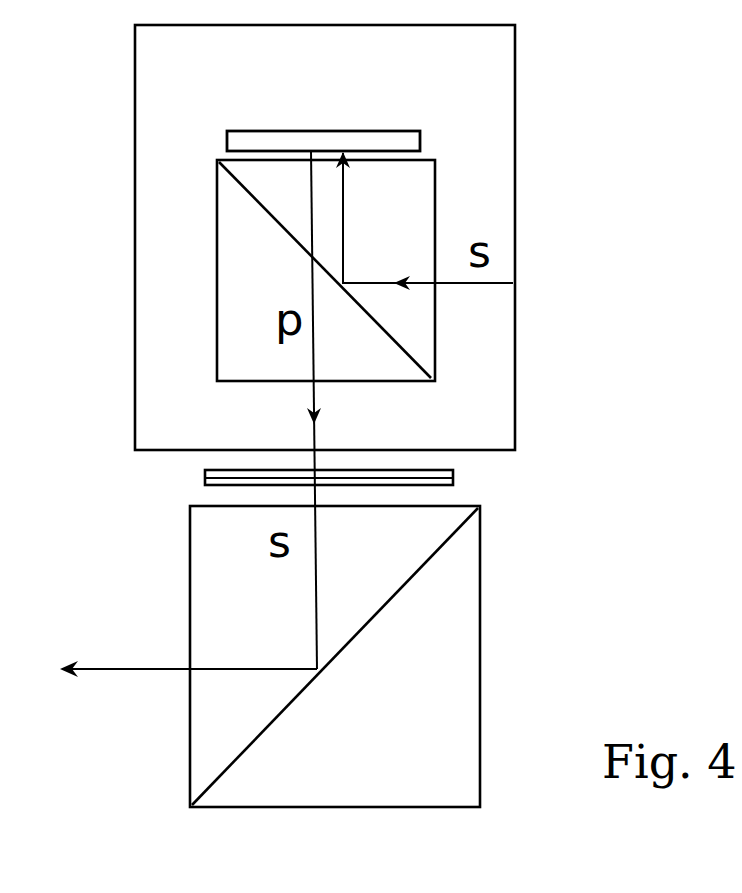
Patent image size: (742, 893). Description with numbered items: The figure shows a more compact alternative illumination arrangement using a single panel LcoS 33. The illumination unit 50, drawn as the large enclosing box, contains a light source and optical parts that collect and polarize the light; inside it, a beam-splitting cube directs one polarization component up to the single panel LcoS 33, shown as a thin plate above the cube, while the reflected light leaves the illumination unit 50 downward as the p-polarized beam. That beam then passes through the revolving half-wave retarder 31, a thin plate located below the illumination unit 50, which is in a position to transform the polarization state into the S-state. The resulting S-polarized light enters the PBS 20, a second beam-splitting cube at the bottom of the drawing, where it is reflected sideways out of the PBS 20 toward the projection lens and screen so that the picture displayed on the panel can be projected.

The illumination unit 50 is at (340, 75).
The single panel LcoS 33 is at (227, 146).
The revolving half-wave retarder 31 is at (453, 474).
The PBS 20 is at (400, 752).